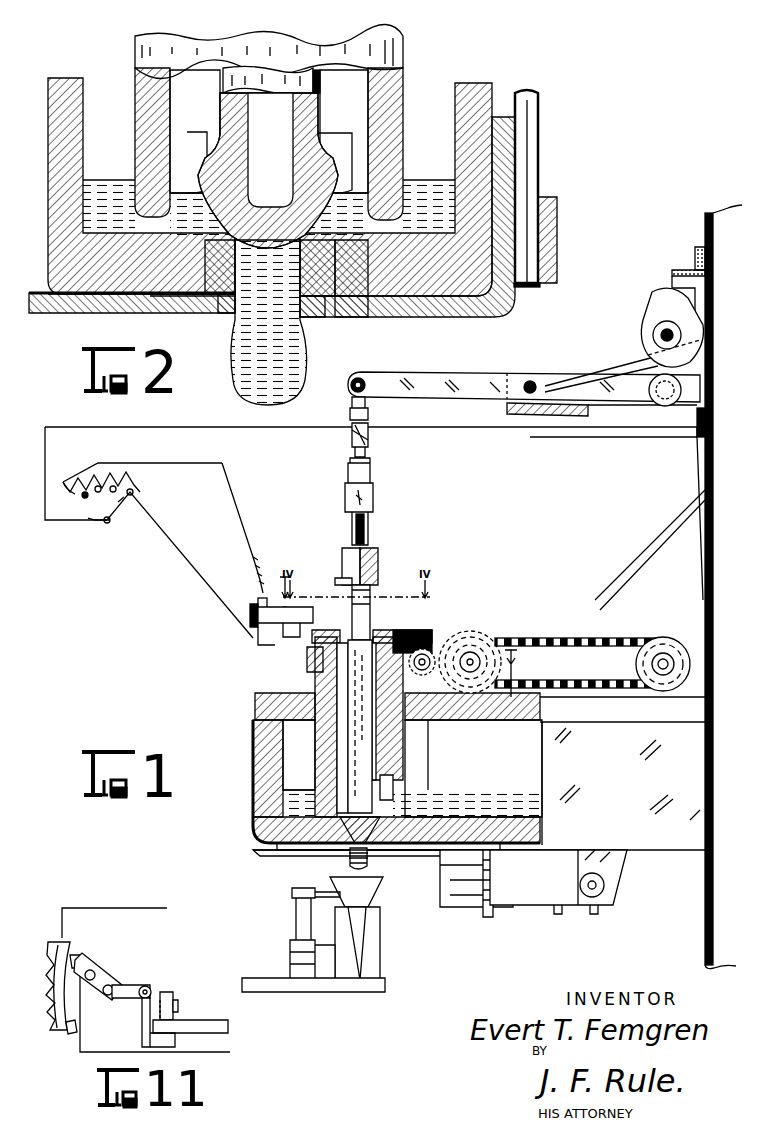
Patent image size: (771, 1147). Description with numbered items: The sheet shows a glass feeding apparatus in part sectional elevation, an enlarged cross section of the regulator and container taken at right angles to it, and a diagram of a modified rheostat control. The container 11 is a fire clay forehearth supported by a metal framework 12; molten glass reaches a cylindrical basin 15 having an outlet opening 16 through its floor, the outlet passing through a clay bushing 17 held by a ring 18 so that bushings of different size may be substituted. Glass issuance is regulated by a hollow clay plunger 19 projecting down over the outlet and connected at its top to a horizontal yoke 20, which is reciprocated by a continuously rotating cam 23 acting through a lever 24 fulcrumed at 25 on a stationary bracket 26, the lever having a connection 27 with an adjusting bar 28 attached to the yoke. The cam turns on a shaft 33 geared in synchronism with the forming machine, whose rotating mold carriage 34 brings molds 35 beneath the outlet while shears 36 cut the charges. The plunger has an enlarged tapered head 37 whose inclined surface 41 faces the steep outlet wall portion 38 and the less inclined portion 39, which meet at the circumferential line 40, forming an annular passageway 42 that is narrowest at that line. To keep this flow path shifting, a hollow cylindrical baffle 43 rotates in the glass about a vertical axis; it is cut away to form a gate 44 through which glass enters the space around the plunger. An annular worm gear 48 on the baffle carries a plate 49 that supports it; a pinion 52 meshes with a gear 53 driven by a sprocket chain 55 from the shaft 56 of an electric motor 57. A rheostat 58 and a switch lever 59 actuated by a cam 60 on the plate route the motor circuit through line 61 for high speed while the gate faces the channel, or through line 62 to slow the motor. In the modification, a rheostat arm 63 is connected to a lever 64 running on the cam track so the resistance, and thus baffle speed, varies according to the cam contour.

In FIG. 2, the container 11 is at (60, 233).
In FIG. 1, the container 11 is at (253, 832).
In FIG. 2, the metal framework 12 is at (440, 317).
In FIG. 1, the metal framework 12 is at (280, 852).
In FIG. 1, the cylindrical chamber or basin 15 is at (262, 693).
In FIG. 2, the outlet opening 16 is at (242, 318).
In FIG. 1, the outlet opening 16 is at (348, 858).
In FIG. 2, the clay bushing 17 is at (310, 316).
In FIG. 1, the clay bushing 17 is at (383, 856).
In FIG. 1, the ring 18 is at (320, 852).
In FIG. 2, the regulating member 19 is at (320, 97).
In FIG. 1, the regulating member 19 is at (380, 745).
In FIG. 1, the horizontal yoke 20 is at (376, 556).
In FIG. 1, the cam 23 is at (655, 306).
In FIG. 1, the lever 24 is at (480, 372).
In FIG. 1, the fulcrum 25 is at (530, 380).
In FIG. 1, the stationary bracket 26 is at (606, 368).
In FIG. 1, the connection 27 is at (368, 450).
In FIG. 1, the adjusting bar 28 is at (373, 495).
In FIG. 1, the continuously rotating shaft 33 is at (656, 330).
In FIG. 1, the rotating mold carriage 34 is at (330, 992).
In FIG. 1, the molds 35 is at (380, 945).
In FIG. 1, the shears 36 is at (440, 880).
In FIG. 2, the head 37 is at (322, 305).
In FIG. 2, the steep portion of outlet walls 38 is at (226, 305).
In FIG. 2, the less inclined portion of outlet walls 39 is at (170, 308).
In FIG. 2, the circumferential line 40 is at (200, 310).
In FIG. 2, the inclined surface 41 is at (302, 314).
In FIG. 2, the annular passageway 42 is at (230, 320).
In FIG. 1, the hollow cylindrical member 43 is at (315, 742).
In FIG. 1, the passageway or gate 44 is at (430, 780).
In FIG. 2, the annular worm gear 48 is at (364, 314).
In FIG. 1, the annular worm gear 48 is at (307, 667).
In FIG. 1, the plate 49 is at (375, 630).
In FIG. 1, the pinion 52 is at (432, 645).
In FIG. 1, the gear 53 is at (488, 640).
In FIG. 1, the sprocket chain 55 is at (640, 648).
In FIG. 1, the motor shaft 56 is at (660, 690).
In FIG. 1, the electric motor 57 is at (668, 638).
In FIG. 1, the rheostat 58 is at (116, 478).
In FIG. 1, the switch lever 59 is at (288, 606).
In FIG. 1, the cam 60 is at (300, 620).
In FIG. 11, the cam 60 is at (178, 1016).
In FIG. 1, the line 61 is at (193, 573).
In FIG. 1, the line 62 is at (240, 506).
In FIG. 11, the rheostat arm 63 is at (96, 980).
In FIG. 11, the lever 64 is at (155, 986).